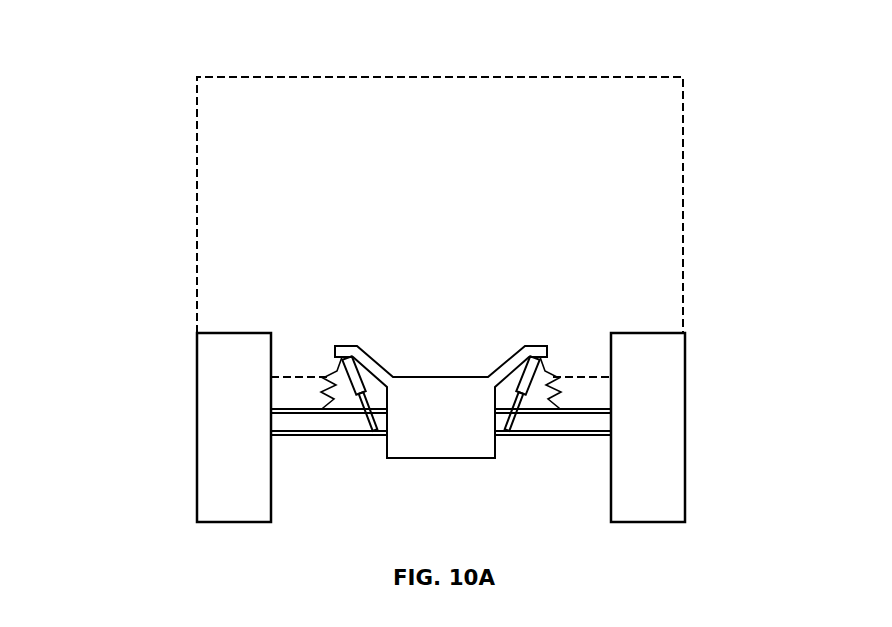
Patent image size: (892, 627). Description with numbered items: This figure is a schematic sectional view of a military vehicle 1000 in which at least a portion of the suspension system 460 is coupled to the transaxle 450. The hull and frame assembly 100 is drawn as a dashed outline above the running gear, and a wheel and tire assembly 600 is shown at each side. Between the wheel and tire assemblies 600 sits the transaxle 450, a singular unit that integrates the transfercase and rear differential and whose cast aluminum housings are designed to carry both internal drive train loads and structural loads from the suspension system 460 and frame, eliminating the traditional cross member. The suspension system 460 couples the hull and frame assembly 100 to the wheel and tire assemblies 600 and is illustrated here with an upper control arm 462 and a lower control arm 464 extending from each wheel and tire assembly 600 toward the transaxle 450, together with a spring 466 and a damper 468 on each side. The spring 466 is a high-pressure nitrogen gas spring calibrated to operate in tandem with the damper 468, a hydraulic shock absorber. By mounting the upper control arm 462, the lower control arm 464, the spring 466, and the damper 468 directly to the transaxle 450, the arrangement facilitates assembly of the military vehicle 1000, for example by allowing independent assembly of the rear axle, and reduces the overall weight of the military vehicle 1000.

The military vehicle 1000 is at (182, 86).
The hull and frame assembly 100 is at (633, 77).
The wheel and tire assemblies 600 is at (213, 407).
The transaxle 450 is at (457, 398).
The suspension system 460 is at (353, 450).
The upper control arm 462 is at (292, 411).
The lower control arm 464 is at (285, 436).
The spring 466 is at (325, 408).
The damper 468 is at (497, 422).